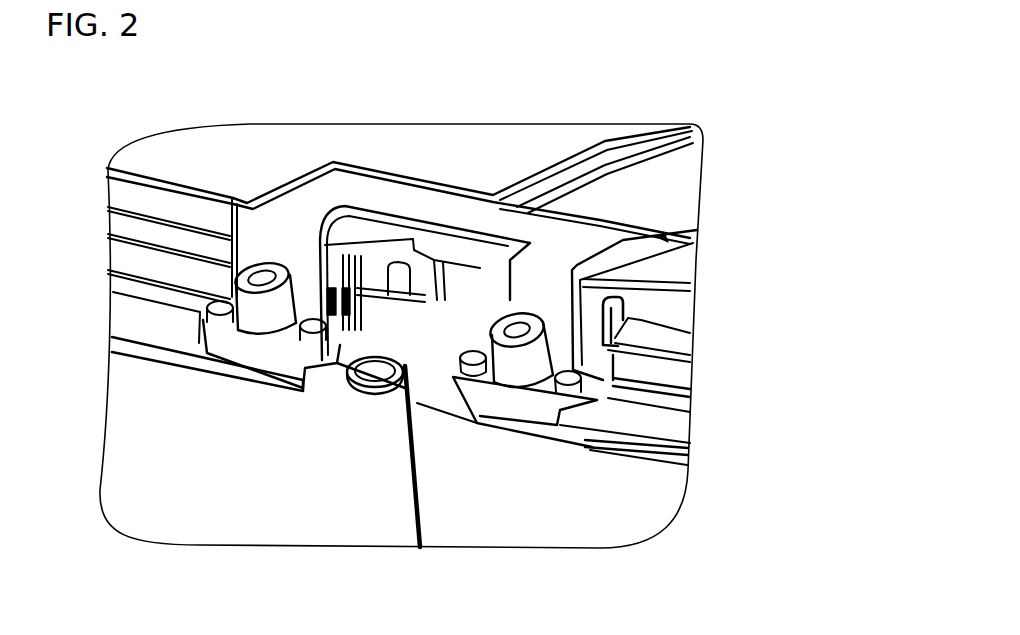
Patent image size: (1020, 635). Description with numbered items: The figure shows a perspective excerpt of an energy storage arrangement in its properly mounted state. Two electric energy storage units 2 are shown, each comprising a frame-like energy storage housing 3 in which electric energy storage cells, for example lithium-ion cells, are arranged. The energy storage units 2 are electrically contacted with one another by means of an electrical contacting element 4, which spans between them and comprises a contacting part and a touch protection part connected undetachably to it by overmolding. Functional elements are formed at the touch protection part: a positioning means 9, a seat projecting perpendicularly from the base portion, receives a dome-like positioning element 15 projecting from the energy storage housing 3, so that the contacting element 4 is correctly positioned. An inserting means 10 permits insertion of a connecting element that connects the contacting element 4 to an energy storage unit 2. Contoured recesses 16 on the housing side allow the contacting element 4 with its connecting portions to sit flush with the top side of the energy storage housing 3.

The electric energy storage unit 2 is at (313, 143).
The energy storage housing 3 is at (158, 457).
The electrical contacting element 4 is at (402, 203).
The positioning means 9 is at (600, 378).
The inserting means 10 is at (527, 367).
The dome-like positioning element 15 is at (537, 320).
The contoured recess 16 is at (692, 220).